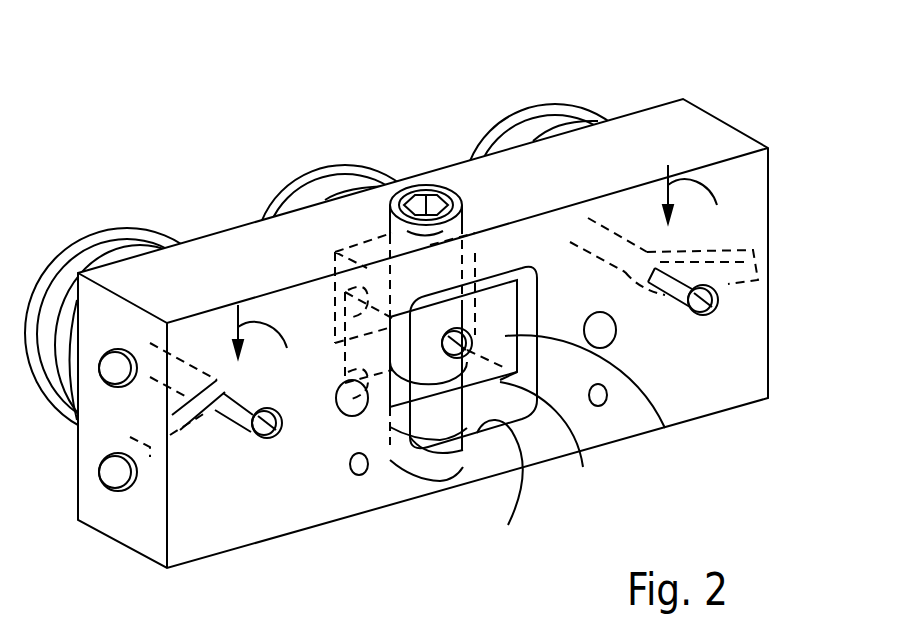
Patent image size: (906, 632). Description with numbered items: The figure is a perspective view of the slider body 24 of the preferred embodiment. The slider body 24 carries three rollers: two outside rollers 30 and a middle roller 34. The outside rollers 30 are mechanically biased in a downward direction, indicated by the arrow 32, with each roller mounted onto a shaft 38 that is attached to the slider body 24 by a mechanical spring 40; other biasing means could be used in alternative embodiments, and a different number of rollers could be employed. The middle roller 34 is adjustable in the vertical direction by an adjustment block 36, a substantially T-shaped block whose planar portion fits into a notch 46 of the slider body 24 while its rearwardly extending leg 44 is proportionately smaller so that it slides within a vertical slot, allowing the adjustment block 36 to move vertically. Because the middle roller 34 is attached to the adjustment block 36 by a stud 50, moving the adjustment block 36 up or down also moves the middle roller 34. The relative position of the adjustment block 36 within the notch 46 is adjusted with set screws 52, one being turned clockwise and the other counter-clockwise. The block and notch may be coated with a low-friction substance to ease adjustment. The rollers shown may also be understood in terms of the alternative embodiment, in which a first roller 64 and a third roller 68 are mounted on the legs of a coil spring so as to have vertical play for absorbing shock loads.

The slider body 24 is at (700, 380).
The rollers 30 is at (127, 228).
The arrow 32 is at (494, 270).
The middle roller 34 is at (330, 163).
The adjustment block 36 is at (583, 467).
The shaft 38 is at (277, 440).
The mechanical spring 40 is at (503, 300).
The rearwardly extending leg 44 is at (335, 252).
The notch 46 is at (456, 423).
The stud 50 is at (665, 428).
The set screws 52 is at (426, 200).
The first roller 64 is at (78, 250).
The third roller 68 is at (568, 108).